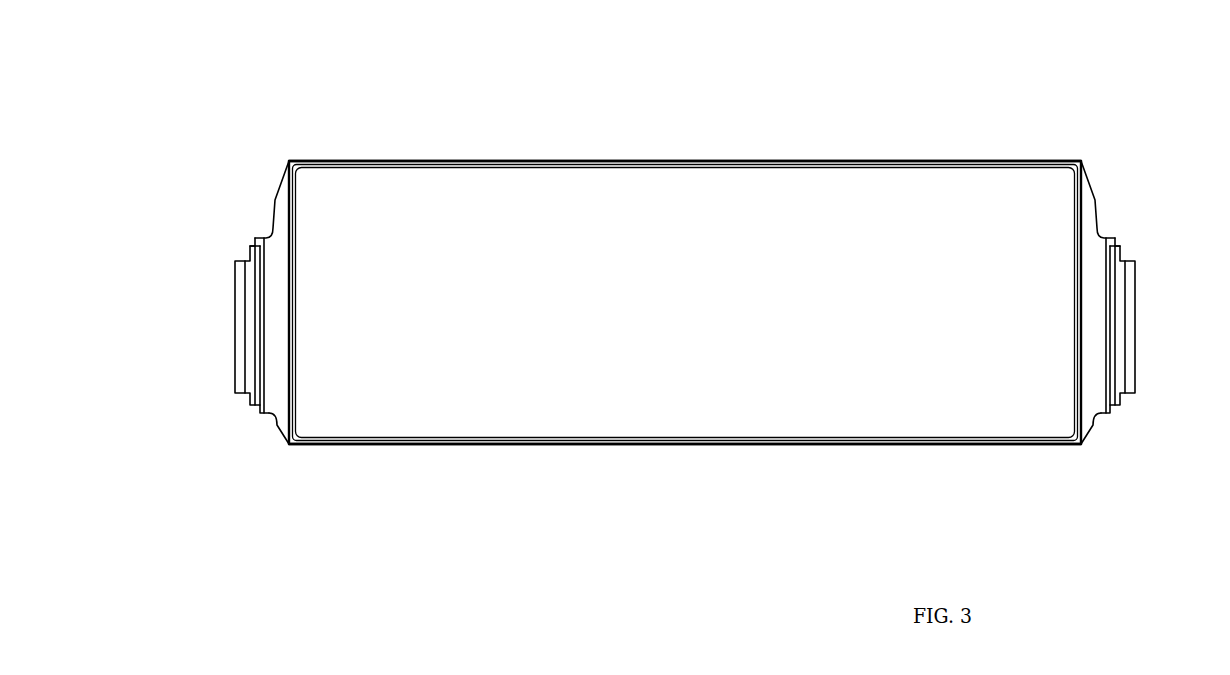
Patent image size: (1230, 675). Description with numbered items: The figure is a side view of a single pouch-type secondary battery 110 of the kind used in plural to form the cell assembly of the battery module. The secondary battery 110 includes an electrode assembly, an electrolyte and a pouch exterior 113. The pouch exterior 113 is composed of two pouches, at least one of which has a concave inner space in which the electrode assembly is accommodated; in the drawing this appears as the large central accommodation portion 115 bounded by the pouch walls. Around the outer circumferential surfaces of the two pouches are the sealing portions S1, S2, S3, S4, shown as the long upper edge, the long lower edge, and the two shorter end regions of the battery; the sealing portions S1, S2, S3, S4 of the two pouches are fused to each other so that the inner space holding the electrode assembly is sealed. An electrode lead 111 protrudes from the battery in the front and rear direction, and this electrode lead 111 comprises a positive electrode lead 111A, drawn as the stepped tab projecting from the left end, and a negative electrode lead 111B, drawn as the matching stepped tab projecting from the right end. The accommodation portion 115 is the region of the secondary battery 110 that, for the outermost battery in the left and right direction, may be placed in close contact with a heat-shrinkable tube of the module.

The pouch-type secondary battery 110 is at (423, 39).
The electrode lead 111 is at (868, 50).
The positive electrode lead 111A is at (235, 323).
The negative electrode lead 111B is at (1136, 323).
The pouch exterior 113 is at (290, 161).
The accommodation portion 115 is at (472, 183).
The sealing portion S1 is at (985, 160).
The sealing portion S2 is at (805, 447).
The sealing portion S3 is at (281, 202).
The sealing portion S4 is at (1090, 203).